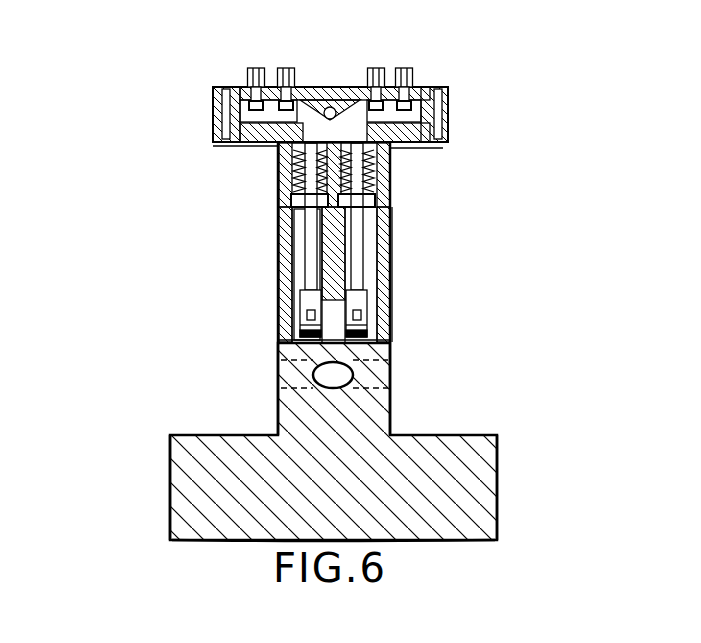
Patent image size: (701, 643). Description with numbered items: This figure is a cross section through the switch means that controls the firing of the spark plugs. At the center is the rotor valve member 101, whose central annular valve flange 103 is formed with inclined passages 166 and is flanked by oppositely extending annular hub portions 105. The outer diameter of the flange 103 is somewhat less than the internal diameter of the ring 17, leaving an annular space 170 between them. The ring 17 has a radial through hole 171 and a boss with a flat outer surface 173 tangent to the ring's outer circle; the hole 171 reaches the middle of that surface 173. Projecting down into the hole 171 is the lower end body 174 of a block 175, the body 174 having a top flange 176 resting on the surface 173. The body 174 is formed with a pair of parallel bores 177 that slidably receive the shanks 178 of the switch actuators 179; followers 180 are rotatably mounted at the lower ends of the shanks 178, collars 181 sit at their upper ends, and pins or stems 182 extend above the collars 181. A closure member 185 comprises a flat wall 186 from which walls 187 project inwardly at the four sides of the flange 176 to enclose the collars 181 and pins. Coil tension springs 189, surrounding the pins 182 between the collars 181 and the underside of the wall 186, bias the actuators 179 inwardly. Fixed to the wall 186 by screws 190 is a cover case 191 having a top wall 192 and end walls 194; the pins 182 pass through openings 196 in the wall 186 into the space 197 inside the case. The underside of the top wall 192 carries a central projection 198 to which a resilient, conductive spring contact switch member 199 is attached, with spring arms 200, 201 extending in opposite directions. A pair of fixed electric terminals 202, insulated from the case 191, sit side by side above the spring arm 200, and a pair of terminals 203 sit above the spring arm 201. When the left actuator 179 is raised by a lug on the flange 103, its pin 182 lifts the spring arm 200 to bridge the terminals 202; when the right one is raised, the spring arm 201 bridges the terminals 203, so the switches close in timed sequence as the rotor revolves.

The ring 17 is at (378, 266).
The rotor valve member 101 is at (148, 453).
The central annular valve flange 103 is at (393, 406).
The annular hub portions 105 is at (187, 502).
The passages 166 is at (353, 374).
The annular space 170 is at (393, 333).
The radial through hole 171 is at (305, 265).
The flat outer surface 173 is at (398, 215).
The lower end body 174 is at (352, 272).
The block 175 is at (258, 219).
The top flange 176 is at (392, 190).
The bores 177 is at (304, 290).
The shanks 178 is at (306, 234).
The switch actuators 179 is at (303, 325).
The followers 180 is at (279, 360).
The collars 181 is at (290, 200).
The pins or stems 182 is at (284, 172).
The closure member 185 is at (228, 146).
The flat wall 186 is at (455, 130).
The walls 187 is at (285, 150).
The coil tension springs 189 is at (438, 148).
The screws 190 is at (214, 88).
The cover case 191 is at (332, 66).
The top wall 192 is at (352, 92).
The end walls 194 is at (214, 112).
The openings 196 is at (284, 68).
The space 197 is at (247, 72).
The central projection 198 is at (343, 92).
The spring contact switch member 199 is at (318, 105).
The spring arm 200 is at (234, 86).
The spring arm 201 is at (452, 98).
The fixed electric terminals 202 is at (256, 68).
The terminals 203 is at (377, 68).